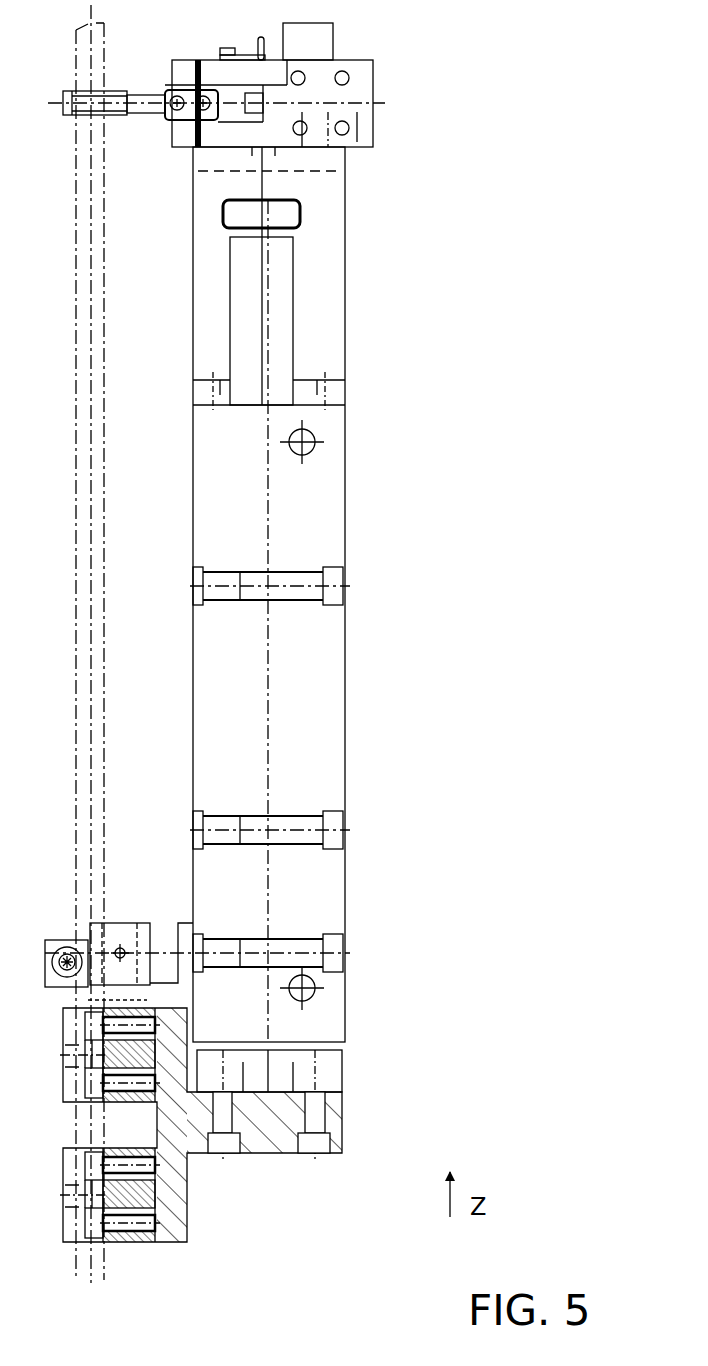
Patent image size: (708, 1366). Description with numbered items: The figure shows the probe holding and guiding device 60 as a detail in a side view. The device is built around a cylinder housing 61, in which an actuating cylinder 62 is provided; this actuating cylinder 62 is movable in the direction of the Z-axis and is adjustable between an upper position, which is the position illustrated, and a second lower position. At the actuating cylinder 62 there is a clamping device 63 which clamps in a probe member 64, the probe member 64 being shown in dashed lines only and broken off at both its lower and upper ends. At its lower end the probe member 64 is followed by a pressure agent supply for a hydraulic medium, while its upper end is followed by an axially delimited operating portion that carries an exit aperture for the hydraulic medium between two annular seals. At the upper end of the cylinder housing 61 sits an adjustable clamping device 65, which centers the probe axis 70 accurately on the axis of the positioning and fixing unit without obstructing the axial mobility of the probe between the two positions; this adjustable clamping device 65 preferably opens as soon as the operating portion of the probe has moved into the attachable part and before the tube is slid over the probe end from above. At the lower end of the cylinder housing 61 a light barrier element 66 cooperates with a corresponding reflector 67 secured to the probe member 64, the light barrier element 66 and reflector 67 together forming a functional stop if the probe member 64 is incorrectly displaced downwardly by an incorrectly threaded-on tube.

The probe holding and guiding device 60 is at (269, 532).
The cylinder housing 61 is at (333, 775).
The actuating cylinder 62 is at (342, 1083).
The clamping device 63 is at (180, 1140).
The probe member 64 is at (75, 650).
The adjustable clamping device 65 is at (147, 93).
The light barrier element 66 is at (137, 920).
The reflector 67 is at (55, 937).
The probe axis 70 is at (90, 370).